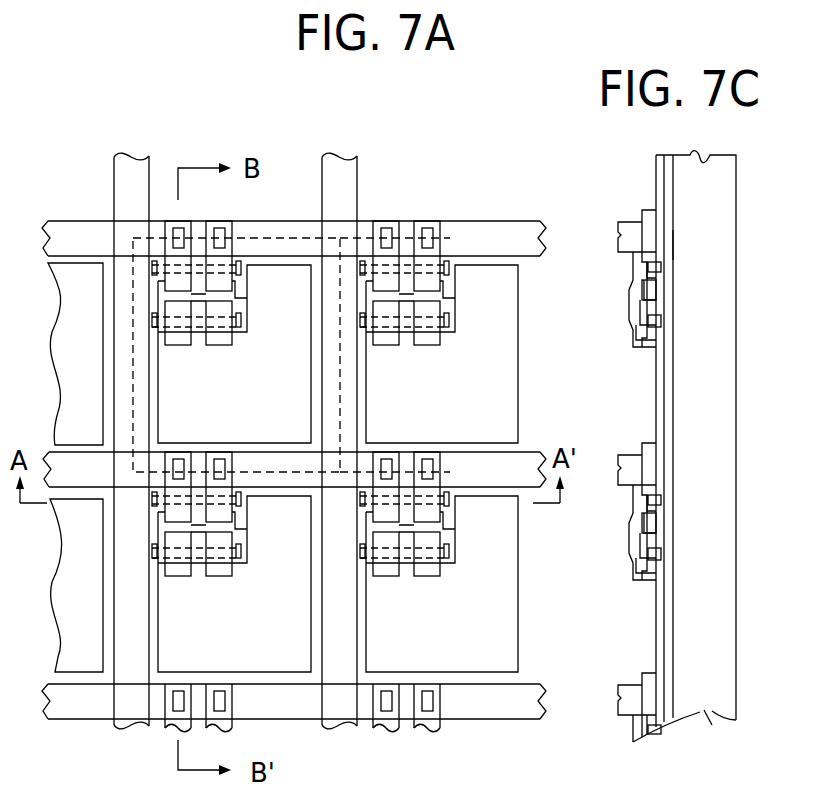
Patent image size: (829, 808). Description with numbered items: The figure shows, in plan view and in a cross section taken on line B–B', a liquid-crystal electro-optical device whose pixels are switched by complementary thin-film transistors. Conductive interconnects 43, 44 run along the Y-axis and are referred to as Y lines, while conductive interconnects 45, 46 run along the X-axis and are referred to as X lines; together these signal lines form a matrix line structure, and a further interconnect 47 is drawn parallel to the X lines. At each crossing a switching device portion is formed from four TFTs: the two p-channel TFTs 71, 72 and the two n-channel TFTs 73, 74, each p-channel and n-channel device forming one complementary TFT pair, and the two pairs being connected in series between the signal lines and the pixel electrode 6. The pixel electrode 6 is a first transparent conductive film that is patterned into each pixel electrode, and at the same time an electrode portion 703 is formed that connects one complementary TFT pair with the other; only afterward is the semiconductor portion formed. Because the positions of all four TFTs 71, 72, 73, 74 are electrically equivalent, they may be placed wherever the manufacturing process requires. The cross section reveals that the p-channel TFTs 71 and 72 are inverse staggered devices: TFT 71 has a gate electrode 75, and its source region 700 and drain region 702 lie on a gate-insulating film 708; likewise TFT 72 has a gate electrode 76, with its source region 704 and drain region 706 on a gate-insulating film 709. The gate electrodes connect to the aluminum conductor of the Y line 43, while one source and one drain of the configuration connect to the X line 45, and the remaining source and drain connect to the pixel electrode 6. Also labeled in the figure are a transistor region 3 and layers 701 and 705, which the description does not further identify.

In FIG. 7A, the conductive interconnect 43 is at (134, 409).
In FIG. 7A, the conductive interconnect 44 is at (340, 412).
In FIG. 7A, the conductive interconnect 45 is at (294, 208).
In FIG. 7C, the conductive interconnect 45 is at (633, 207).
In FIG. 7A, the conductive interconnect 46 is at (273, 448).
In FIG. 7A, the scanning line 47 is at (294, 734).
In FIG. 7A, the thin film transistor 3 is at (234, 258).
In FIG. 7A, the transparent conductive film 6 is at (234, 312).
In FIG. 7A, the p-channel TFT 71 is at (157, 284).
In FIG. 7A, the p-channel TFT 72 is at (154, 357).
In FIG. 7A, the n-channel TFT 73 is at (269, 282).
In FIG. 7A, the n-channel TFT 74 is at (264, 335).
In FIG. 7A, the electrode portion 703 is at (104, 333).
In FIG. 7C, the electrode portion 703 is at (682, 294).
In FIG. 7C, the source region 700 is at (604, 296).
In FIG. 7C, the semiconductor layer 701 is at (609, 280).
In FIG. 7C, the drain region 702 is at (611, 300).
In FIG. 7C, the source region 704 is at (612, 323).
In FIG. 7C, the passivation film 705 is at (614, 348).
In FIG. 7C, the drain region 706 is at (635, 324).
In FIG. 7C, the gate-insulating film 708 is at (695, 242).
In FIG. 7C, the gate-insulating film 709 is at (693, 438).
In FIG. 7C, the gate electrode 75 is at (680, 267).
In FIG. 7C, the gate electrode 76 is at (680, 320).